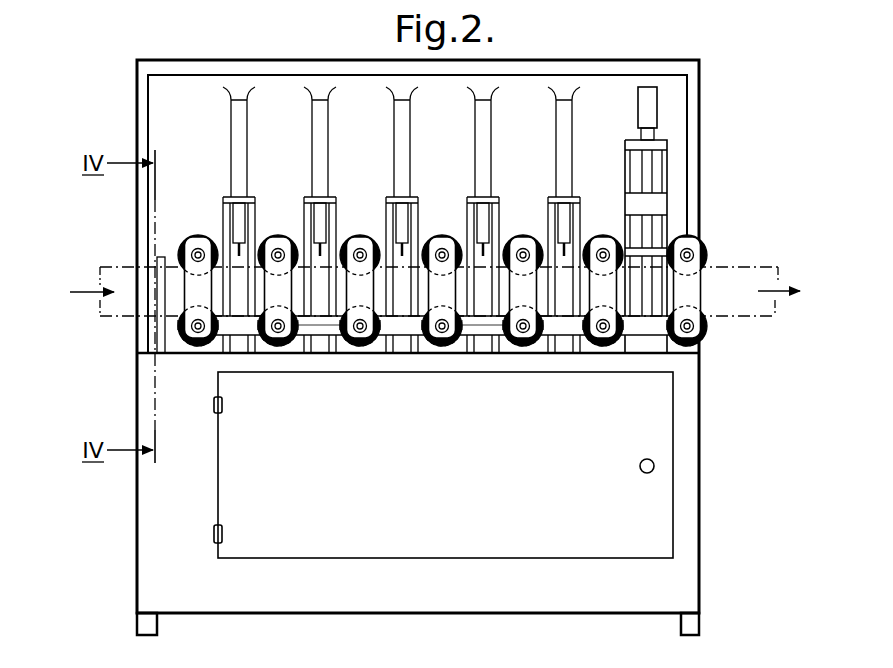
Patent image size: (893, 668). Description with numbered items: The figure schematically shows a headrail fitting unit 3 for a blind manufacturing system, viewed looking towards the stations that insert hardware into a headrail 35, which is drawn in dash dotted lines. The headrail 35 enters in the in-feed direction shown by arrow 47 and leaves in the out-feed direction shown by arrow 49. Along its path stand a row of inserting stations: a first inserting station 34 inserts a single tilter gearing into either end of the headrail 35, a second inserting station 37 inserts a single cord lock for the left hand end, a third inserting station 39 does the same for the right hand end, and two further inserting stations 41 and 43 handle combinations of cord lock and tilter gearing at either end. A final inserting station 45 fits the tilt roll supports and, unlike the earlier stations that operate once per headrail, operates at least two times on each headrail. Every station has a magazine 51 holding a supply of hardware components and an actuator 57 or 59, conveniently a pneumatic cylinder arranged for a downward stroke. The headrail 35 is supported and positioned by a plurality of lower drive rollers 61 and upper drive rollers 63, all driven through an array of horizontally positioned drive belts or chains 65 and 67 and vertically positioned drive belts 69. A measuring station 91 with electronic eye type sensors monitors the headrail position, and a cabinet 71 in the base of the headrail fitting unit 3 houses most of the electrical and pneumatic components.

The headrail fitting unit 3 is at (313, 51).
The first inserting station 34 is at (224, 213).
The headrail 35 is at (128, 303).
The second inserting station 37 is at (305, 213).
The third inserting station 39 is at (387, 213).
The further inserting station 41 is at (467, 217).
The further inserting station 43 is at (548, 211).
The final inserting station 45 is at (627, 205).
The in-feed direction arrow 47 is at (84, 290).
The out-feed direction arrow 49 is at (775, 280).
The magazine 51 is at (316, 132).
The actuator 57 is at (238, 212).
The actuator 59 is at (647, 112).
The lower drive rollers 61 is at (183, 339).
The upper drive rollers 63 is at (189, 237).
The horizontally positioned drive belts or chains 65 is at (243, 332).
The horizontally positioned drive belts or chains 67 is at (324, 332).
The vertically positioned drive belts 69 is at (699, 288).
The cabinet 71 is at (668, 594).
The measuring station 91 is at (148, 297).